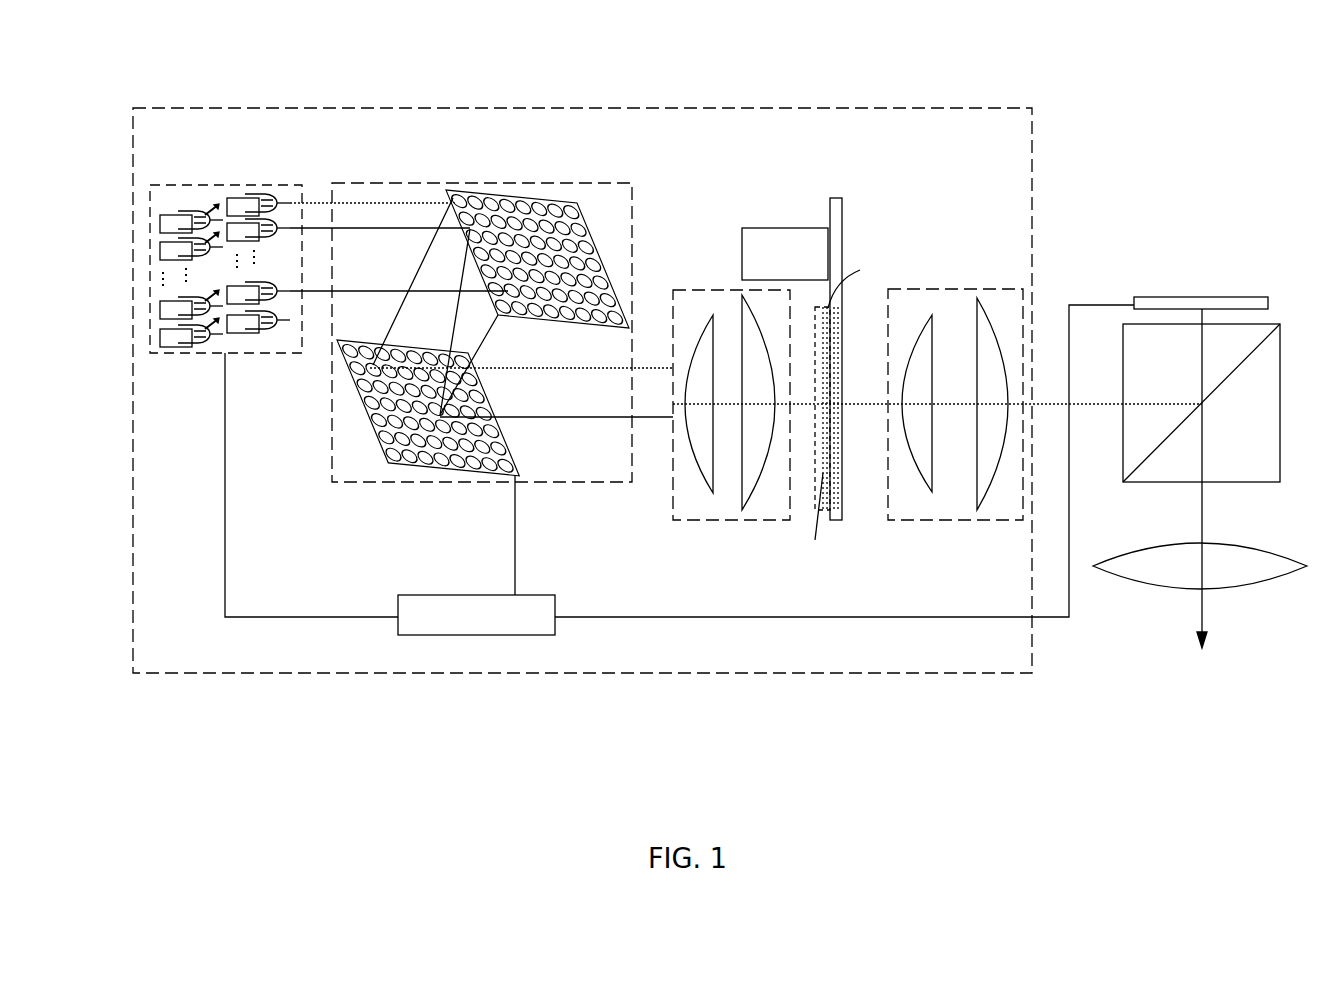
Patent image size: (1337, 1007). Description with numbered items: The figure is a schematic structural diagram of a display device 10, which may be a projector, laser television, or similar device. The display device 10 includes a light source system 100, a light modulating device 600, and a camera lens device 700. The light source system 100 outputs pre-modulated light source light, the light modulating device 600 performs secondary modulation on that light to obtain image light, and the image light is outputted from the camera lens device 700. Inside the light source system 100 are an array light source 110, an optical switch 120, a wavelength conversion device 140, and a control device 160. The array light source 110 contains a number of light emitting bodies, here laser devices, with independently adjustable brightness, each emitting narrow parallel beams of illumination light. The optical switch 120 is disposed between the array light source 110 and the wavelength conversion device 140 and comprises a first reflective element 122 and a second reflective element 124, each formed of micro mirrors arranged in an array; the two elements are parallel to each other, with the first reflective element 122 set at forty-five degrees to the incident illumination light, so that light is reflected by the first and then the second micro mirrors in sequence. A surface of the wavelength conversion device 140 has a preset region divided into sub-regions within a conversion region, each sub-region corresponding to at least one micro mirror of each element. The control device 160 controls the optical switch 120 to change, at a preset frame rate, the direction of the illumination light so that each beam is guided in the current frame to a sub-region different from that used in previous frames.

The display device 10 is at (582, 64).
The light source system 100 is at (297, 673).
The array light source 110 is at (227, 182).
The optical switch 120 is at (488, 342).
The first reflective element 122 is at (547, 205).
The second reflective element 124 is at (415, 463).
The wavelength conversion device 140 is at (785, 228).
The control device 160 is at (490, 637).
The light modulating device 600 is at (1200, 297).
The camera lens device 700 is at (1152, 582).